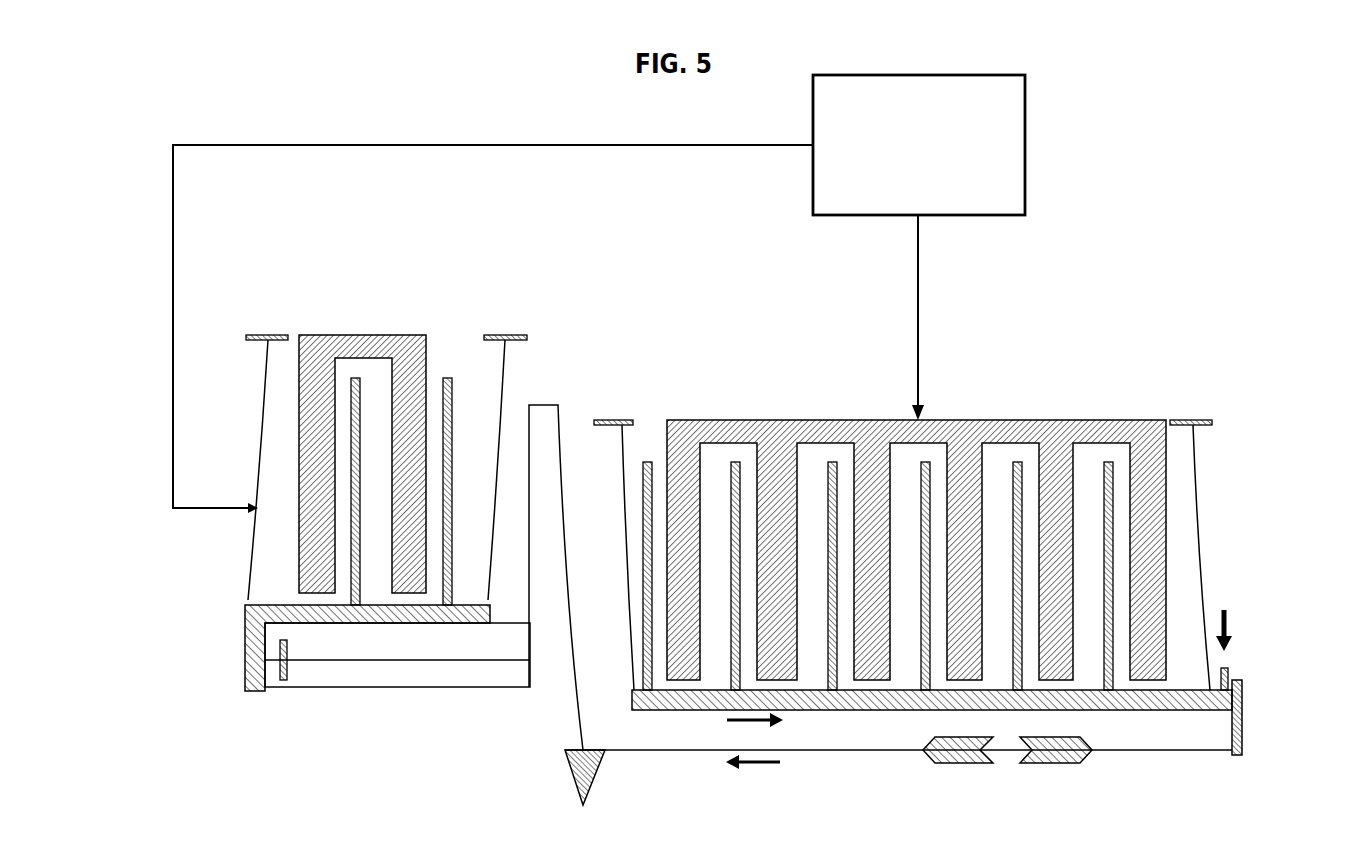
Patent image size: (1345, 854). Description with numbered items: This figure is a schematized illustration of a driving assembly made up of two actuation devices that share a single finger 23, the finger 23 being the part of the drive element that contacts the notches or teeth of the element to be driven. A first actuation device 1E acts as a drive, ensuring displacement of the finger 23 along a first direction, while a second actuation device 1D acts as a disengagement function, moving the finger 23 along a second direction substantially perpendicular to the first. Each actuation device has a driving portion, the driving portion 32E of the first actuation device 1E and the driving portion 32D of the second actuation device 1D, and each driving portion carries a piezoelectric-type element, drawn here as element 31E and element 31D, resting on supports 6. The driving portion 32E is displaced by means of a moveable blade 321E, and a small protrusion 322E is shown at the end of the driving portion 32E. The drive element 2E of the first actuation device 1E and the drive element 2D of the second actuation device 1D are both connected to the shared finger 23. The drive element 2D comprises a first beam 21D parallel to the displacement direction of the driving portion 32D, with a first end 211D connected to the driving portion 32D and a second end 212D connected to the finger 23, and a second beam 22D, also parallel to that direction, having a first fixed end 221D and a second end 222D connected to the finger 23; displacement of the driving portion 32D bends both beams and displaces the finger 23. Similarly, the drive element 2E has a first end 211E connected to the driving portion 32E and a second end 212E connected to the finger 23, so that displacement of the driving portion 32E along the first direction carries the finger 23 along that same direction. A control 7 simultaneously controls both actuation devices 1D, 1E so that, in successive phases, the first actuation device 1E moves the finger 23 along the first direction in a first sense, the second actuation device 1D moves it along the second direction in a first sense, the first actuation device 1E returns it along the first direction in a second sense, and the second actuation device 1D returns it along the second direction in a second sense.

The control 7 is at (1025, 145).
The support member 6 is at (268, 338).
The second actuation device 1D is at (377, 458).
The piezoelectric element 31D is at (370, 344).
The driving portion 32D is at (273, 612).
The drive element 2D is at (380, 586).
The first beam 21D is at (382, 688).
The second beam 22D is at (357, 660).
The first fixed end 221D is at (280, 657).
The second end 222D is at (530, 658).
The first end 211D is at (270, 691).
The second end 212D is at (530, 688).
The first actuation device 1E is at (974, 555).
The piezoelectric element 31E is at (828, 425).
The driving portion 32E is at (974, 603).
The moveable blade 321E is at (1202, 548).
The protrusion 322E is at (1243, 682).
The drive element 2E is at (883, 743).
The finger 23 is at (578, 768).
The second end 212E is at (605, 752).
The first end 211E is at (1237, 755).